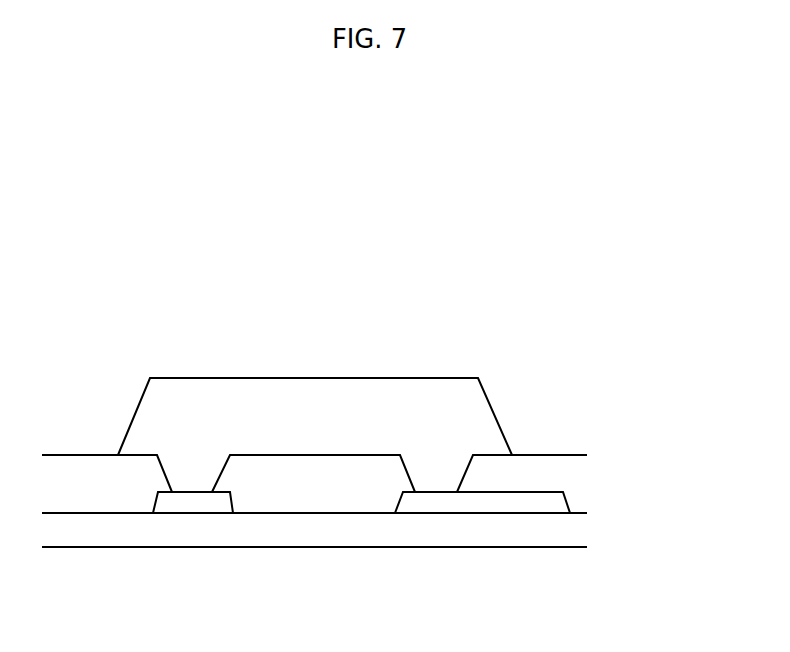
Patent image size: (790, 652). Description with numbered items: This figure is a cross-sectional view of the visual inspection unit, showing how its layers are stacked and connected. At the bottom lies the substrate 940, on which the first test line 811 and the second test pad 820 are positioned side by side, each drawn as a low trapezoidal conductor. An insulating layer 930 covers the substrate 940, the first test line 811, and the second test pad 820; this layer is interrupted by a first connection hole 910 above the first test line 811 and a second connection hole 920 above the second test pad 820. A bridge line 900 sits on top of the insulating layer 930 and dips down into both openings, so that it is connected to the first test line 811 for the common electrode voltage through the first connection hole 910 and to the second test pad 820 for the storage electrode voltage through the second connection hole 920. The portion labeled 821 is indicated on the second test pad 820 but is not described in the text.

The bridge line 900 is at (483, 418).
The first connection hole 910 is at (168, 472).
The second connection hole 920 is at (408, 470).
The insulating layer 930 is at (562, 480).
The substrate 940 is at (572, 538).
The first test line 811 is at (200, 505).
The second test pad 820 is at (435, 505).
The pad electrode portion 821 is at (533, 505).